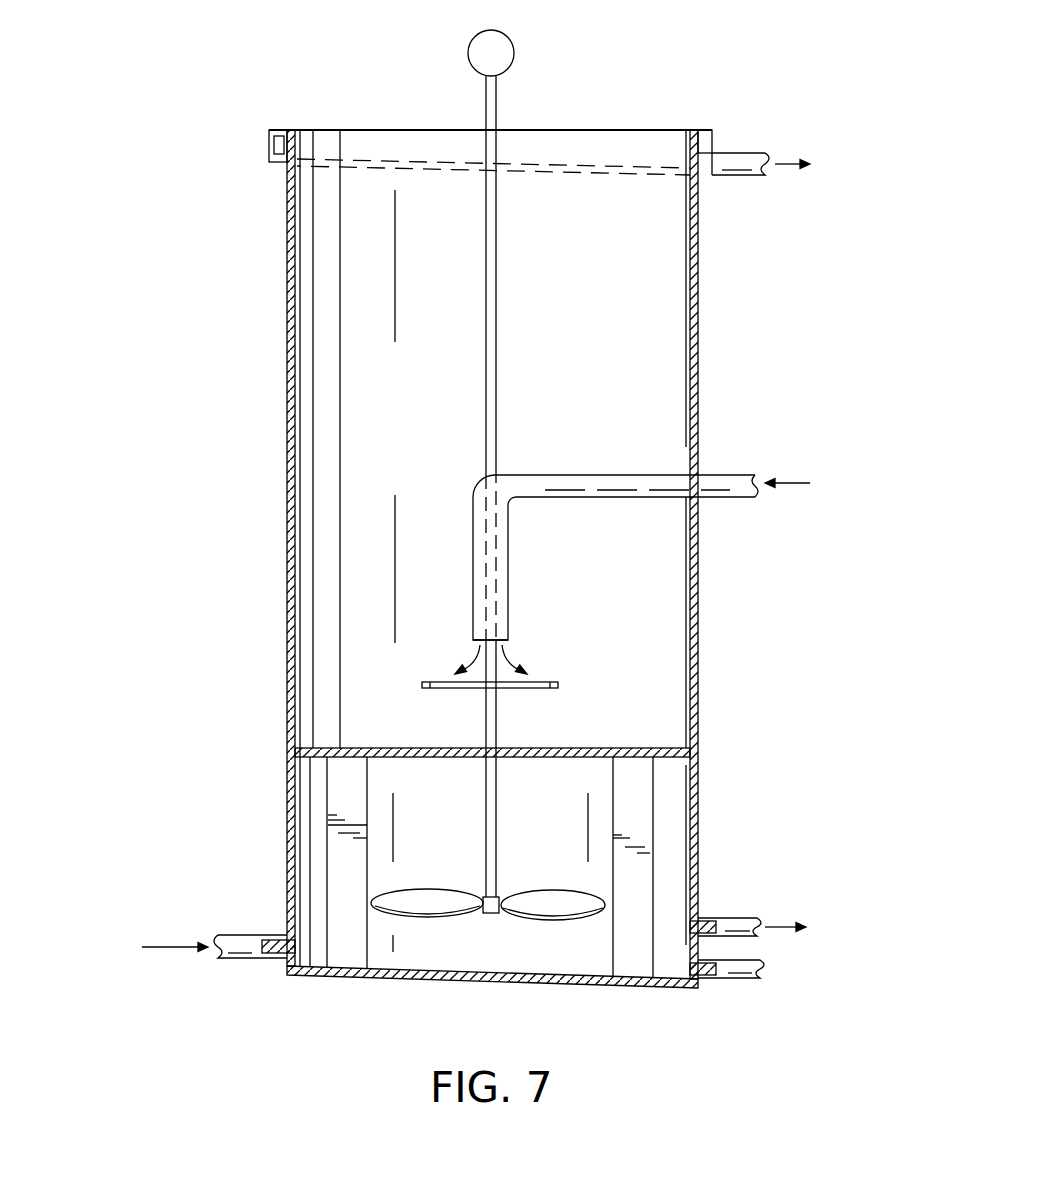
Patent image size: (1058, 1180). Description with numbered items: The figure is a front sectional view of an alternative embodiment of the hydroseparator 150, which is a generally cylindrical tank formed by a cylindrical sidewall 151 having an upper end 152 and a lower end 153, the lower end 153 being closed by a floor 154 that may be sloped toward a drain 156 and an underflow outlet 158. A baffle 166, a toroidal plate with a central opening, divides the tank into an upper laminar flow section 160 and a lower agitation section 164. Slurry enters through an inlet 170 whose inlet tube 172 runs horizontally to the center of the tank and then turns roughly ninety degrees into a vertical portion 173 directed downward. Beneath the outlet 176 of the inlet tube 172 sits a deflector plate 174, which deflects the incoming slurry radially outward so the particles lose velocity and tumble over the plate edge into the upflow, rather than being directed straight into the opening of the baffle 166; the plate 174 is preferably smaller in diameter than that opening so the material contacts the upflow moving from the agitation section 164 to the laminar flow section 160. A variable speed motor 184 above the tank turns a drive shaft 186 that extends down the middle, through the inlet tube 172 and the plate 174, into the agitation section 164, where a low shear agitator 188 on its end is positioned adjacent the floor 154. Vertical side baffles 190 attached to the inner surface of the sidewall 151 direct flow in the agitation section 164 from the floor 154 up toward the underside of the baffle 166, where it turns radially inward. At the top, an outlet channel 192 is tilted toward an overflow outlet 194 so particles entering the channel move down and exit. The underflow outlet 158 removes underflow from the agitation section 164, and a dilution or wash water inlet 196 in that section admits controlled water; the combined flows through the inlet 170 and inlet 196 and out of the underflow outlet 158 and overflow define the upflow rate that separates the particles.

The hydroseparator 150 is at (203, 78).
The cylindrical sidewall 151 is at (290, 360).
The upper end 152 is at (290, 130).
The lower end 153 is at (283, 967).
The floor 154 is at (557, 978).
The drain 156 is at (707, 972).
The underflow outlet 158 is at (706, 918).
The laminar flow section 160 is at (660, 338).
The agitation section 164 is at (673, 813).
The baffle 166 is at (667, 748).
The inlet 170 is at (466, 494).
The inlet tube 172 is at (718, 482).
The vertical portion 173 is at (473, 568).
The deflector plate 174 is at (558, 684).
The outlet 176 is at (503, 644).
The variable speed motor 184 is at (511, 46).
The drive shaft 186 is at (496, 312).
The low shear agitator 188 is at (438, 907).
The side baffles 190 is at (342, 802).
The outlet channel 192 is at (276, 150).
The overflow outlet 194 is at (713, 168).
The dilution water inlet 196 is at (276, 940).